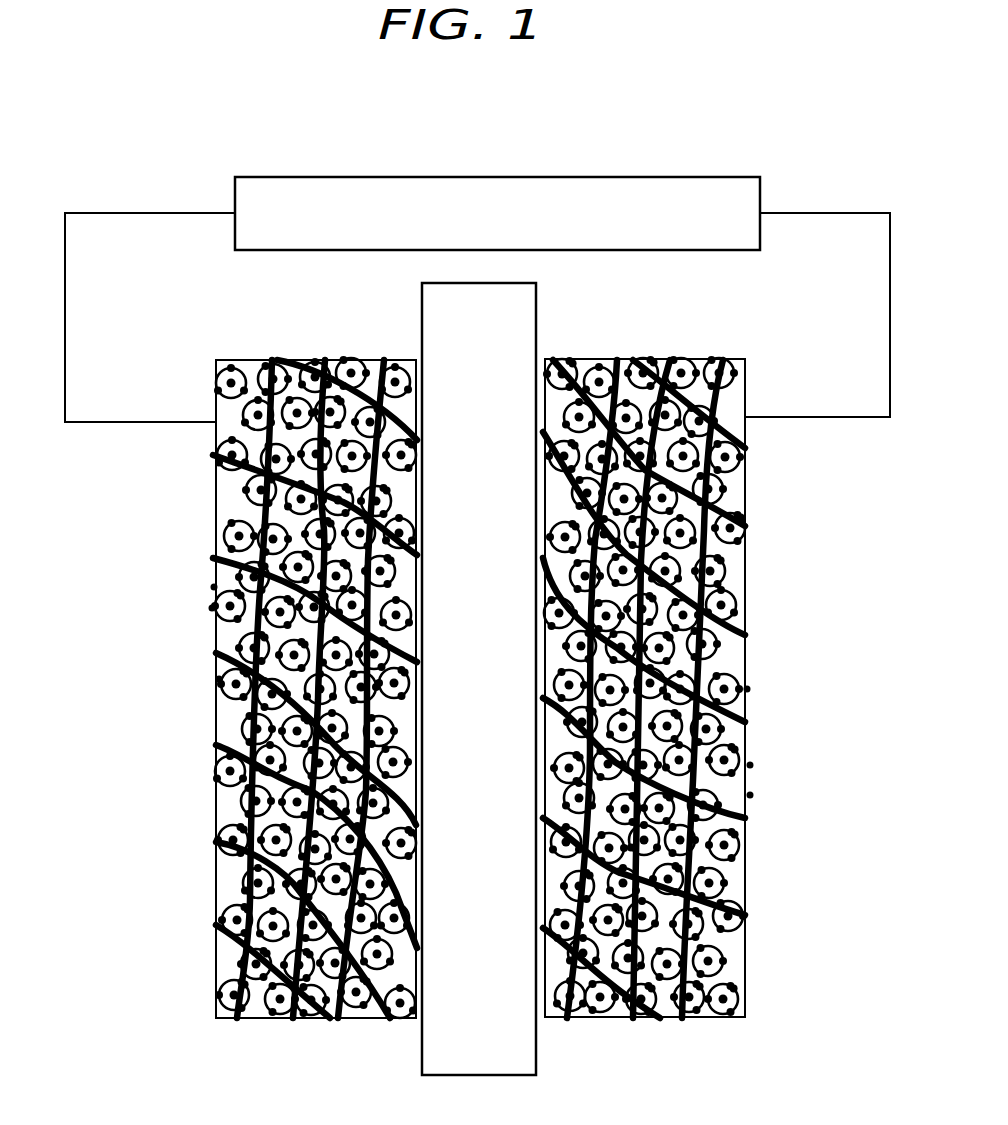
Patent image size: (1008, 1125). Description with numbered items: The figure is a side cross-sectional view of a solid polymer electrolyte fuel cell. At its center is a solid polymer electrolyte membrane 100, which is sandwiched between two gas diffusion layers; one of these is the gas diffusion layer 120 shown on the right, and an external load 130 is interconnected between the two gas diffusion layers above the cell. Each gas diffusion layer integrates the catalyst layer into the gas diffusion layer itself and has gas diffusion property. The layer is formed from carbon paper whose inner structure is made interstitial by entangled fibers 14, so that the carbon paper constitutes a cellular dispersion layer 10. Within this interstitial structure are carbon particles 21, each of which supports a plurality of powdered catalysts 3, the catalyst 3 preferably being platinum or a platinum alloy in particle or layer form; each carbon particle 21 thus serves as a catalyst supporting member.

The powdered catalyst 3 is at (480, 687).
The cellular dispersion layer 10 is at (689, 693).
The entangled fibers 14 is at (474, 689).
The carbon particle 21 is at (479, 691).
The solid polymer electrolyte membrane 100 is at (352, 679).
The gas diffusion layer 120 is at (705, 693).
The external load 130 is at (497, 174).